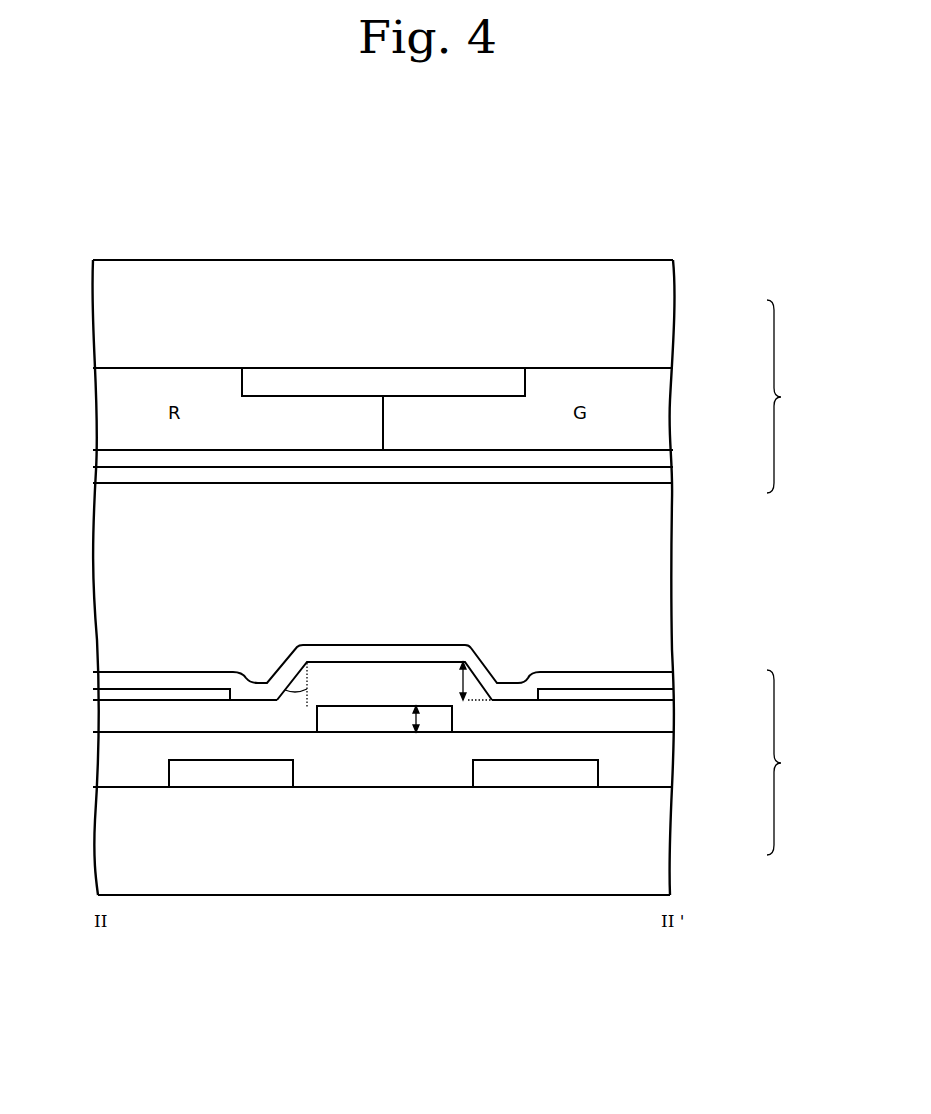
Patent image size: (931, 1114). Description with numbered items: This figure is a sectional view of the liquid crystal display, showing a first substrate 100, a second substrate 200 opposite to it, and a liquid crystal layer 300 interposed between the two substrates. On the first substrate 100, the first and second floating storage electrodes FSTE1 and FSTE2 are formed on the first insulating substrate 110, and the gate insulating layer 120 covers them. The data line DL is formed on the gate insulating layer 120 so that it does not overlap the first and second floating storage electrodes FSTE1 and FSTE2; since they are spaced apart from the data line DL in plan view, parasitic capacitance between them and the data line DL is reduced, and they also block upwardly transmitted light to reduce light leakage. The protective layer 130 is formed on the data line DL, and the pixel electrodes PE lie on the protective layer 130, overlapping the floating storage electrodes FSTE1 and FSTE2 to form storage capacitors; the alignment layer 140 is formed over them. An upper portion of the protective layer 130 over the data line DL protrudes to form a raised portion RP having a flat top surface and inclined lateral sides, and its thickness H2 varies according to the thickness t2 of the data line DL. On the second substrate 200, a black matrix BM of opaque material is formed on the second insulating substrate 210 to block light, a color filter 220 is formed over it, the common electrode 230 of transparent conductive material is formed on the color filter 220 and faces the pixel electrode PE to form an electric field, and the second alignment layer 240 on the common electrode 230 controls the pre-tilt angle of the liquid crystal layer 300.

The second insulating substrate 210 is at (662, 310).
The color filter 220 is at (662, 410).
The common electrode 230 is at (662, 457).
The second alignment layer 240 is at (662, 481).
The second substrate 200 is at (791, 396).
The liquid crystal layer 300 is at (662, 571).
The alignment layer 140 is at (662, 681).
The pixel electrode PE is at (662, 700).
The raised portion RP is at (390, 660).
The protective layer 130 is at (662, 726).
The data line DL is at (368, 718).
The gate insulating layer 120 is at (662, 761).
The first floating storage electrode FSTE1 is at (230, 775).
The second floating storage electrode FSTE2 is at (545, 775).
The first substrate 100 is at (792, 762).
The first insulating substrate 110 is at (662, 843).
The black matrix BM is at (458, 382).
The thickness of the raised portion H2 is at (462, 681).
The thickness of the data line t2 is at (426, 719).